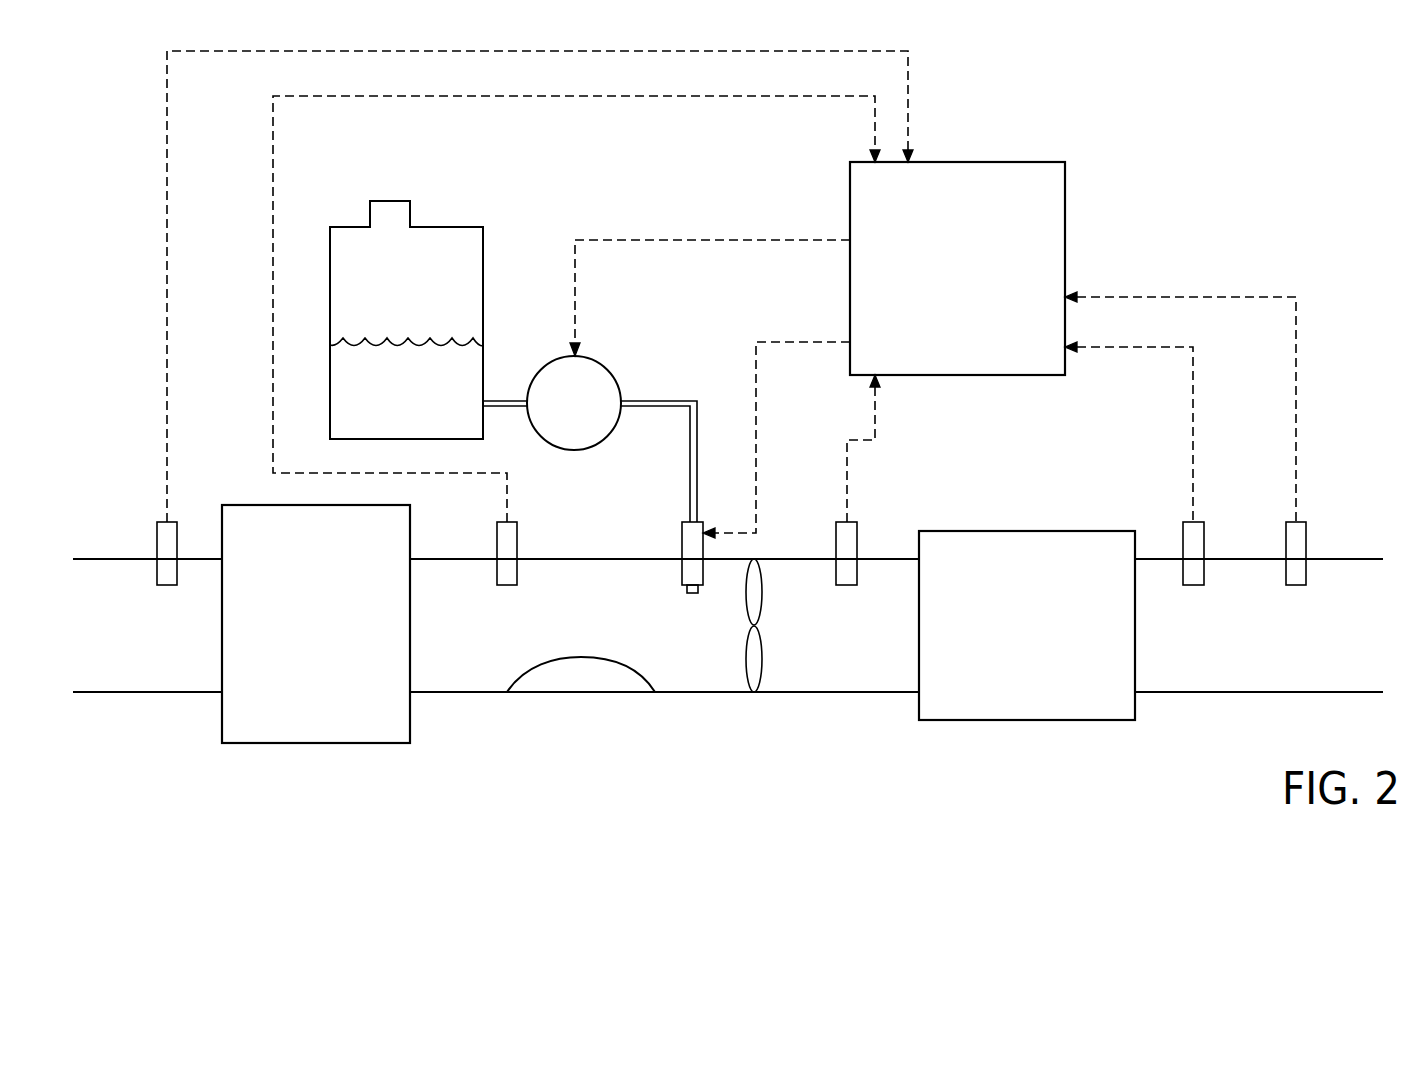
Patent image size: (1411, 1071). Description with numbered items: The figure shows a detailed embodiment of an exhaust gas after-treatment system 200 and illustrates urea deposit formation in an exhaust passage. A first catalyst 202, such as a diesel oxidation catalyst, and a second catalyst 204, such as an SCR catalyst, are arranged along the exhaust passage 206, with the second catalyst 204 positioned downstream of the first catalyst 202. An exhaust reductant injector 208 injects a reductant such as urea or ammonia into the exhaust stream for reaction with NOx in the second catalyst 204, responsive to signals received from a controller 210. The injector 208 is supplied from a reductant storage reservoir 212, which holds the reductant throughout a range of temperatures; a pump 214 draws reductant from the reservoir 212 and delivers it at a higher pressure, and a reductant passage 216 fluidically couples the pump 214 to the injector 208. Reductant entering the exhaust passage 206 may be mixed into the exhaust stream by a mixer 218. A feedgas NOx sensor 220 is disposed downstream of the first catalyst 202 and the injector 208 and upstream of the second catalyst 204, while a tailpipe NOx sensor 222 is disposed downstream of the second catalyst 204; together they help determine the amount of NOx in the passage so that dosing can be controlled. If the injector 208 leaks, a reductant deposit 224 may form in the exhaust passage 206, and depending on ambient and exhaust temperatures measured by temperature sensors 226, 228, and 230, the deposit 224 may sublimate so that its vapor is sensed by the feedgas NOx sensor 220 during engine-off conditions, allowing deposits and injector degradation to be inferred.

The exhaust gas after-treatment system 200 is at (1167, 165).
The first catalyst 202 is at (301, 652).
The second catalyst 204 is at (1013, 652).
The exhaust passage 206 is at (551, 637).
The exhaust reductant injector 208 is at (682, 552).
The controller 210 is at (943, 294).
The reductant storage reservoir 212 is at (437, 227).
The pump 214 is at (560, 415).
The reductant passage 216 is at (697, 458).
The mixer 218 is at (762, 619).
The feedgas NOx sensor 220 is at (507, 586).
The tailpipe NOx sensor 222 is at (1193, 586).
The reductant deposit 224 is at (571, 687).
The temperature sensor 226 is at (167, 586).
The temperature sensor 228 is at (847, 586).
The temperature sensor 230 is at (1296, 586).